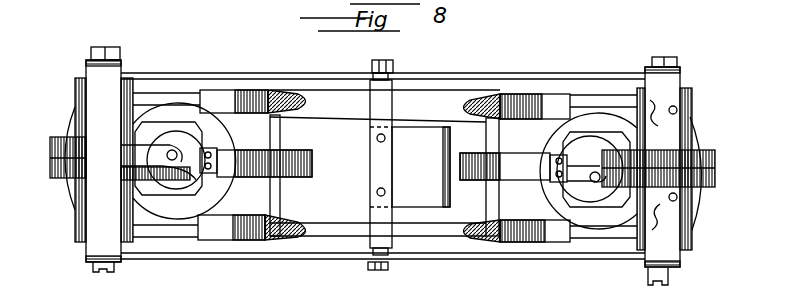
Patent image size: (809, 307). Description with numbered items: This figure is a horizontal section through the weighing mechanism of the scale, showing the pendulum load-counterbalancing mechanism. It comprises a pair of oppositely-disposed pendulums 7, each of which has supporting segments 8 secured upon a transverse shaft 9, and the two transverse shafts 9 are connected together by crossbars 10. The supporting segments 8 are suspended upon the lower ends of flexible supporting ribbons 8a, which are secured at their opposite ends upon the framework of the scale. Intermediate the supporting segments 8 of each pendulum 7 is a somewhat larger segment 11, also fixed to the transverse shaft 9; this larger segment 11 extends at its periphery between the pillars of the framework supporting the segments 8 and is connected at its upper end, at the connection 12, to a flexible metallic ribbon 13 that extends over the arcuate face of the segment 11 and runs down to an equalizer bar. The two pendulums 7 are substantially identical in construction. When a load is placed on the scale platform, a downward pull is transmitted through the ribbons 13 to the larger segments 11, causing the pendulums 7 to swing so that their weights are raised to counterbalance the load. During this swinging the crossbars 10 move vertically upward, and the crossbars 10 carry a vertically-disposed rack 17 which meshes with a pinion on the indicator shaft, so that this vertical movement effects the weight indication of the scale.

The pendulum 7 is at (590, 222).
The supporting segment 8 is at (262, 88).
The flexible supporting ribbon 8a is at (276, 90).
The transverse shaft 9 is at (690, 127).
The crossbar 10 is at (459, 79).
The larger segment 11 is at (53, 140).
The connection 12 is at (222, 148).
The flexible metallic ribbon 13 is at (312, 164).
The rack 17 is at (121, 262).